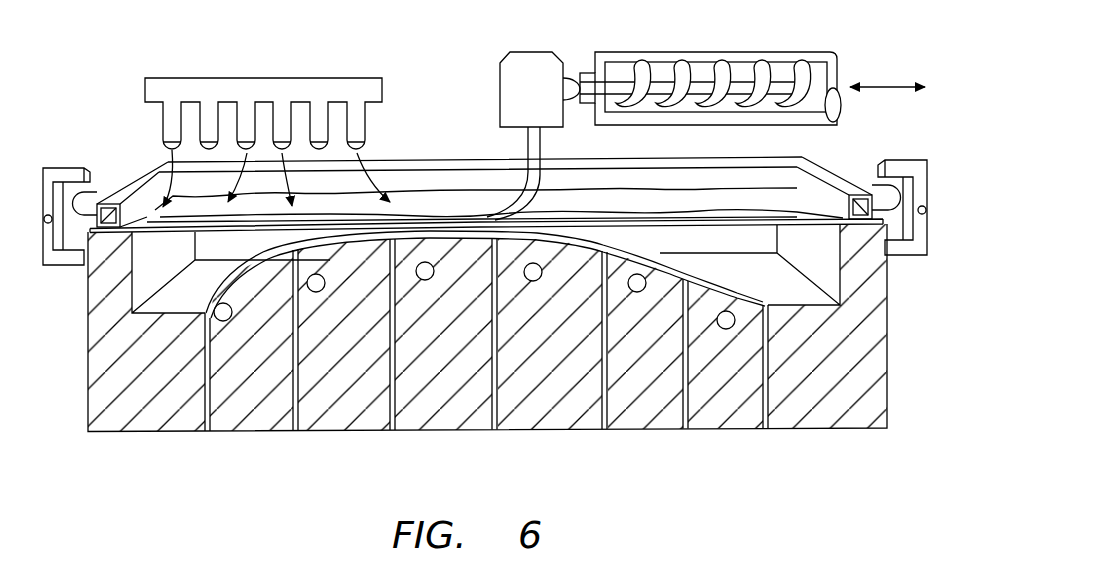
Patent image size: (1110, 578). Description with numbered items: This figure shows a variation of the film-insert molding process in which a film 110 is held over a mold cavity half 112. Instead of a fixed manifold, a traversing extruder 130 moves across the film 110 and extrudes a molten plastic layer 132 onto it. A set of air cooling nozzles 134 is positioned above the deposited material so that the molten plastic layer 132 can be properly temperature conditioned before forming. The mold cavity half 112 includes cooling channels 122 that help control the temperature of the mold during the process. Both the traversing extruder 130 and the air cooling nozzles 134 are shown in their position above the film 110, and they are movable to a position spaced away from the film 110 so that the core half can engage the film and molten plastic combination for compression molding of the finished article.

The film 110 is at (790, 200).
The mold cavity half 112 is at (553, 431).
The cooling channels 122 is at (425, 268).
The traversing extruder 130 is at (532, 70).
The molten plastic layer 132 is at (486, 217).
The air cooling nozzles 134 is at (265, 78).